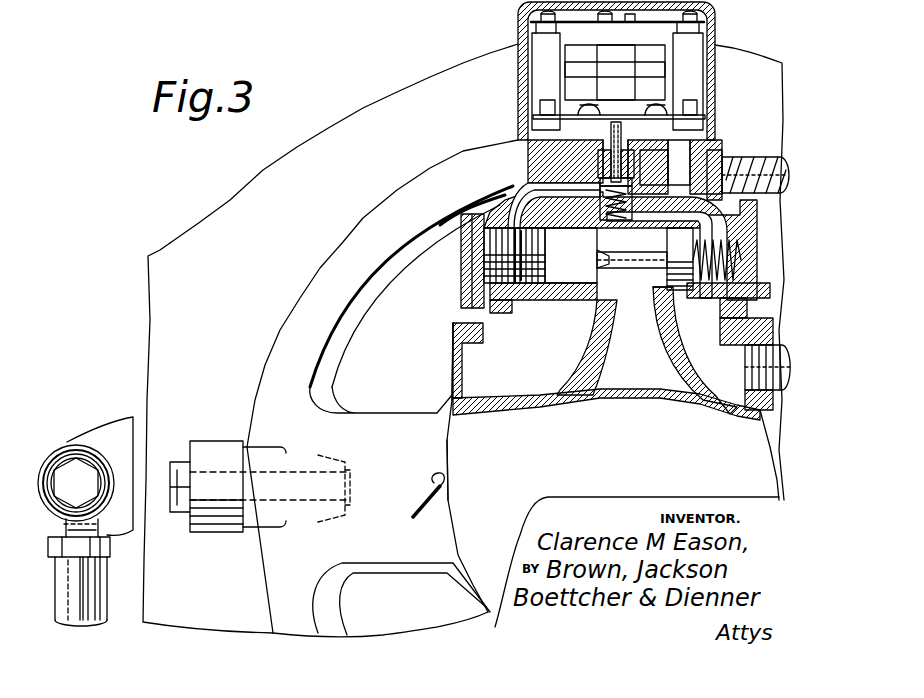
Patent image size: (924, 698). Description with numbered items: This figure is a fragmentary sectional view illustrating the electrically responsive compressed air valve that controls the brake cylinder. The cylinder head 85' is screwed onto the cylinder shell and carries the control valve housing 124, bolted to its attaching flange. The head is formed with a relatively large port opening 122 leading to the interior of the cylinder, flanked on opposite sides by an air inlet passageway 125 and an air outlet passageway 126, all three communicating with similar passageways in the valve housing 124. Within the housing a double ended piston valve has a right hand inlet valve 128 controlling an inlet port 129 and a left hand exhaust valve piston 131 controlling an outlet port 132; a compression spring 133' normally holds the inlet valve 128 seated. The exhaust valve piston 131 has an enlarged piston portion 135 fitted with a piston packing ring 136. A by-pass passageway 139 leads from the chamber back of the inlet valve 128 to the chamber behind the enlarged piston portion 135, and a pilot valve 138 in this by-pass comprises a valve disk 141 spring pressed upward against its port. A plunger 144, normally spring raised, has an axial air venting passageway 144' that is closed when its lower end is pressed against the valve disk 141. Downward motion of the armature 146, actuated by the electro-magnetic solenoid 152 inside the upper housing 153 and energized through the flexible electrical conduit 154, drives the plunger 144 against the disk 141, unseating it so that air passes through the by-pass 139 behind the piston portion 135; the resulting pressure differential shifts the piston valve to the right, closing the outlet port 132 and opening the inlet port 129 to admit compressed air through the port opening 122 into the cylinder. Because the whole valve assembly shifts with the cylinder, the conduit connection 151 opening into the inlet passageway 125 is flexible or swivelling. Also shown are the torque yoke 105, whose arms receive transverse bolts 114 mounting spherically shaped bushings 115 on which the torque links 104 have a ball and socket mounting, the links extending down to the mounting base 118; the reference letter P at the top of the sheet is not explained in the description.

The pressure chamber P is at (278, 11).
The cylinder head 85' is at (426, 470).
The torque links 104 is at (62, 515).
The torque yoke 105 is at (172, 250).
The transverse bolts 114 is at (72, 478).
The spherically shaped bushings 115 is at (50, 486).
The mounting base 118 is at (410, 14).
The port opening 122 is at (617, 380).
The control valve housing 124 is at (482, 202).
The air inlet passageway 125 is at (693, 108).
The air outlet passageway 126 is at (537, 380).
The inlet valve 128 is at (704, 259).
The inlet port 129 is at (675, 292).
The exhaust valve piston 131 is at (588, 252).
The outlet port 132 is at (597, 302).
The compression spring 133' is at (728, 298).
The enlarged piston portion 135 is at (490, 288).
The piston packing ring 136 is at (520, 290).
The pilot valve 138 is at (645, 150).
The by-pass passageway 139 is at (518, 208).
The valve disk 141 is at (600, 200).
The plunger 144 is at (548, 155).
The air venting passageway 144' is at (597, 154).
The armature 146 is at (533, 118).
The conduit connection 151 is at (762, 403).
The electro-magnetic solenoid 152 is at (657, 80).
The upper housing 153 is at (518, 80).
The flexible electrical conduit 154 is at (745, 163).